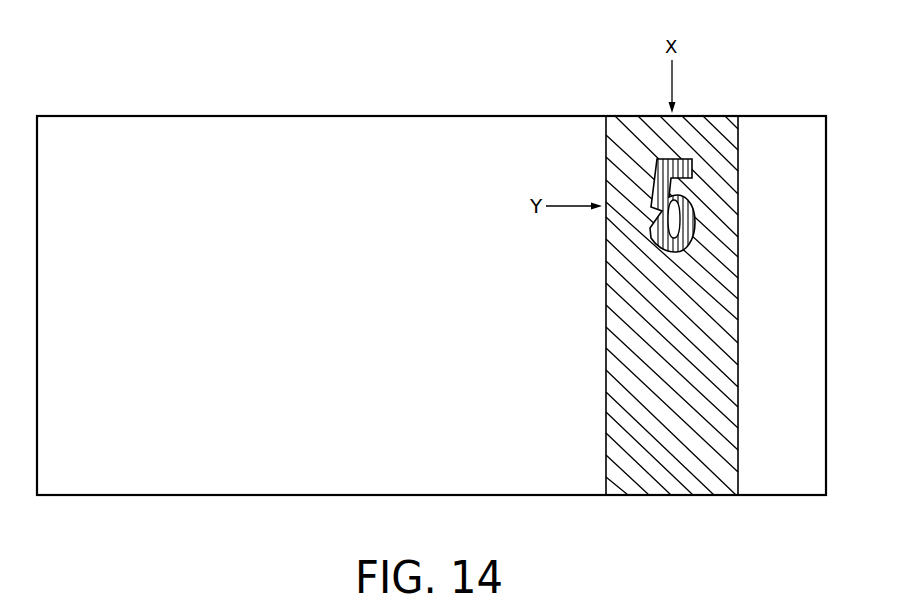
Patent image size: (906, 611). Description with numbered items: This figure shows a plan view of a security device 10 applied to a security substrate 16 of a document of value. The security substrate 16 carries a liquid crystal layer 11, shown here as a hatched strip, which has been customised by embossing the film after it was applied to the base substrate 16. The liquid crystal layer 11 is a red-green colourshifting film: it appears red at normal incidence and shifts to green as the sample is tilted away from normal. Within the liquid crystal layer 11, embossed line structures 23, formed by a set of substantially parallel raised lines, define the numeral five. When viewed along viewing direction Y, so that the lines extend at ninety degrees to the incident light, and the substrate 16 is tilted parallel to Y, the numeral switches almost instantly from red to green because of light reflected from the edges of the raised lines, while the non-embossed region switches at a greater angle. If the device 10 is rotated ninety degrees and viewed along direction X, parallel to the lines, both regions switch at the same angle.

The security device 10 is at (688, 116).
The liquid crystal layer 11 is at (721, 359).
The security substrate 16 is at (79, 495).
The embossed line structures 23 is at (685, 212).